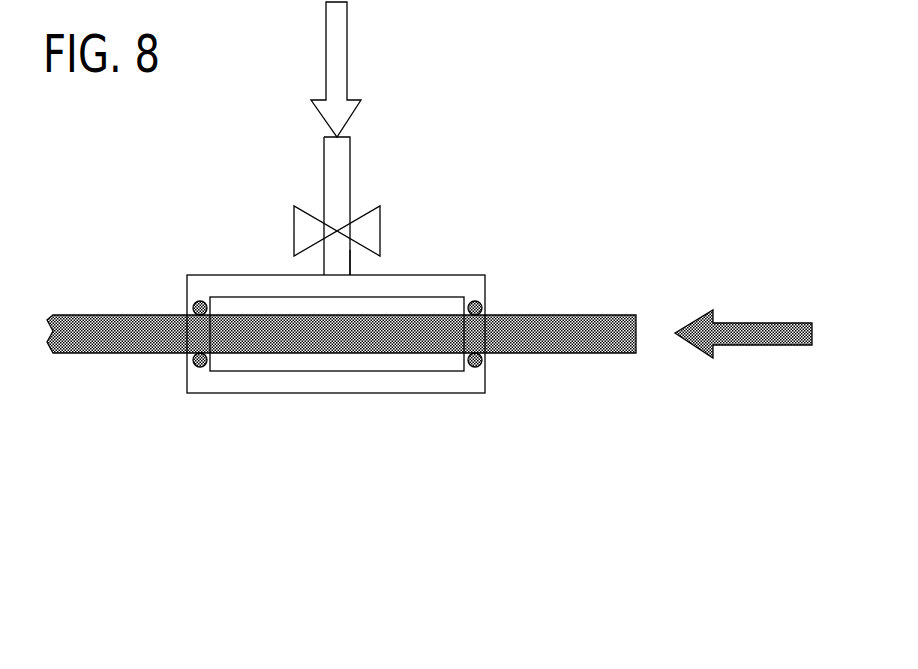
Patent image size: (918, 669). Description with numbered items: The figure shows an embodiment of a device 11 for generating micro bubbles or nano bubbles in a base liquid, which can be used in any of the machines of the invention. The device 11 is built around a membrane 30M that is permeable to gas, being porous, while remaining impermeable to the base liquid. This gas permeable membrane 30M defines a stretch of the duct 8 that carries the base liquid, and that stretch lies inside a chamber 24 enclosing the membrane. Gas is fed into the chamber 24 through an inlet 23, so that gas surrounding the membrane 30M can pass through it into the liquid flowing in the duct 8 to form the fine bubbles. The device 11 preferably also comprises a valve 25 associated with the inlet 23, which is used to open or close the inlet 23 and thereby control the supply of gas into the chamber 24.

The duct 8 is at (570, 358).
The device 11 is at (400, 205).
The inlet 23 is at (354, 263).
The chamber 24 is at (239, 360).
The valve 25 is at (292, 201).
The membrane 30M is at (368, 357).